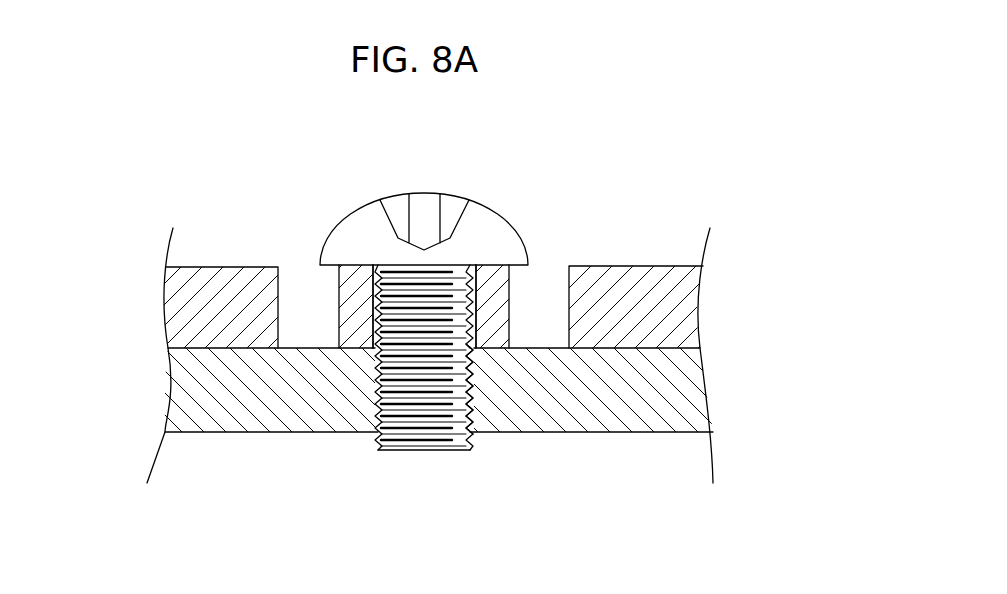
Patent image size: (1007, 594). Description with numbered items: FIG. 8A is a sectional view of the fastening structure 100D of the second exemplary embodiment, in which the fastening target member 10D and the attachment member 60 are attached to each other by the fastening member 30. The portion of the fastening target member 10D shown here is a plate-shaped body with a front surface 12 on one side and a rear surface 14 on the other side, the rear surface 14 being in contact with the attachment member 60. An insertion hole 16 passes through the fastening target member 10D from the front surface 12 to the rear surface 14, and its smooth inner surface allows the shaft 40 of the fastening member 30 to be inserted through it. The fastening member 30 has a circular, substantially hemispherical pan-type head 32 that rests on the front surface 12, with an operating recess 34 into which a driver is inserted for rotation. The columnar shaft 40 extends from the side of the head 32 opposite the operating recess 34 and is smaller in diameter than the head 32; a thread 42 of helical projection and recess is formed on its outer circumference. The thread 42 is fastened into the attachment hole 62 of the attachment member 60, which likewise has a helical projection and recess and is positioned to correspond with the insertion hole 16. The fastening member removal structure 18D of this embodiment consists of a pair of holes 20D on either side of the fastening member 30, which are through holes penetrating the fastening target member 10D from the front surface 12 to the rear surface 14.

The fastening structure 100D is at (110, 213).
The fastening target member 10D is at (649, 262).
The front surface 12 is at (200, 267).
The rear surface 14 is at (475, 442).
The insertion hole 16 is at (473, 267).
The fastening member removal structure 18D is at (300, 254).
The pair of holes 20D is at (292, 283).
The fastening member 30 is at (447, 342).
The head 32 is at (451, 198).
The operating recess 34 is at (397, 204).
The shaft 40 is at (392, 404).
The thread 42 is at (378, 440).
The attachment member 60 is at (273, 433).
The attachment hole 62 is at (476, 351).